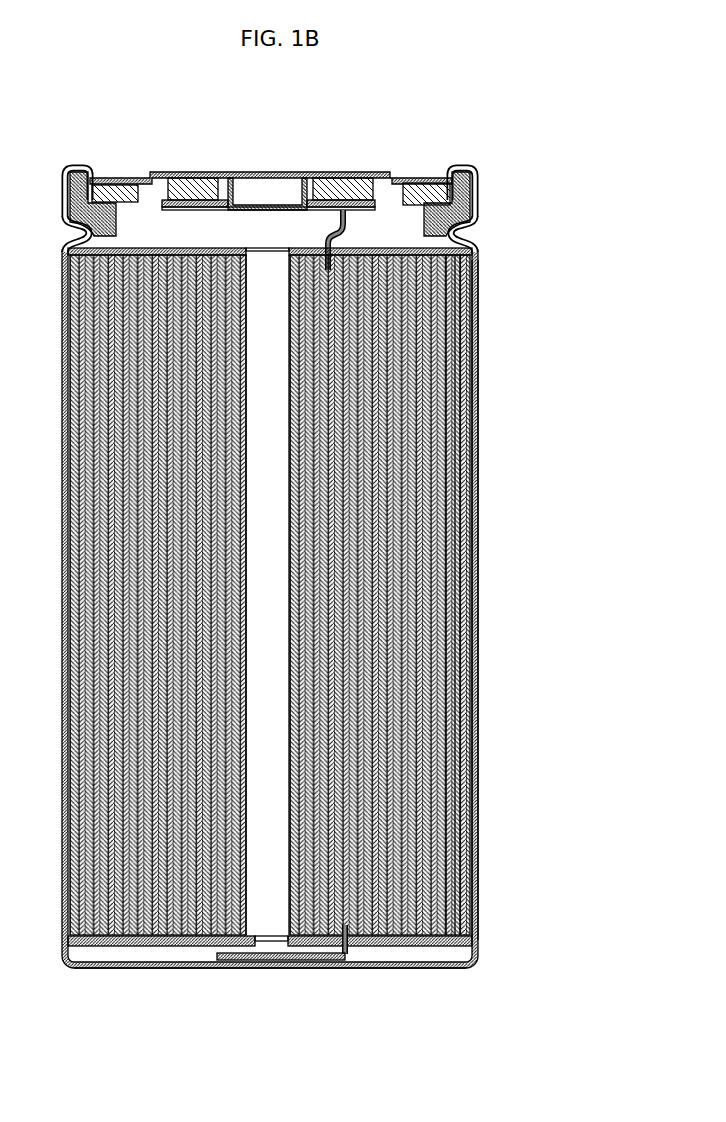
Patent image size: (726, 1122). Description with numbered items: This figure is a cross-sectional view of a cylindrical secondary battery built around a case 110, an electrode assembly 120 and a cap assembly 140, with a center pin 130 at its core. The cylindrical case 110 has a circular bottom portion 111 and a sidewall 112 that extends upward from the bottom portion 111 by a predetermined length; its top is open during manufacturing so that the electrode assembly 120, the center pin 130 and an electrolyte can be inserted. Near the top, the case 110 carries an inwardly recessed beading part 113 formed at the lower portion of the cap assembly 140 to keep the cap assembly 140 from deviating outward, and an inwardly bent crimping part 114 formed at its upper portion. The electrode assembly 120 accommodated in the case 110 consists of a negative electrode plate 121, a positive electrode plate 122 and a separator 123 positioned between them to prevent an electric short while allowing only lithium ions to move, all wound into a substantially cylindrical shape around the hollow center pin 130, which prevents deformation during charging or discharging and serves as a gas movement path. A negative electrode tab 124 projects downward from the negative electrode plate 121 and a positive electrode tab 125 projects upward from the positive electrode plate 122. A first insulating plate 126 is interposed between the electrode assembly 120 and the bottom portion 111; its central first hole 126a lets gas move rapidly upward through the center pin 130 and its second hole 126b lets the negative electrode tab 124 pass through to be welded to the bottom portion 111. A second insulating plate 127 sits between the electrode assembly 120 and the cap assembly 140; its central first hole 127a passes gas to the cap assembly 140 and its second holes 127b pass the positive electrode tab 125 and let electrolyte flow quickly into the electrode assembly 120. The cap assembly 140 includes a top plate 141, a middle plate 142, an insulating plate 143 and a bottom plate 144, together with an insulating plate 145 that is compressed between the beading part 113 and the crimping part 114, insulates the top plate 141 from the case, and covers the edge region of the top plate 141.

The case 110 is at (484, 522).
The bottom portion 111 is at (152, 972).
The sidewall 112 is at (480, 735).
The beading part 113 is at (473, 224).
The crimping part 114 is at (463, 167).
The electrode assembly 120 is at (315, 595).
The negative electrode plate 121 is at (470, 304).
The positive electrode plate 122 is at (450, 368).
The separator 123 is at (456, 330).
The negative electrode tab 124 is at (300, 961).
The positive electrode tab 125 is at (342, 218).
The first insulating plate 126 is at (287, 1004).
The first hole 126a is at (262, 946).
The second hole 126b is at (346, 956).
The second insulating plate 127 is at (314, 237).
The first hole 127a is at (262, 248).
The second holes 127b is at (192, 248).
The center pin 130 is at (298, 625).
The cap assembly 140 is at (315, 155).
The top plate 141 is at (212, 172).
The middle plate 142 is at (176, 178).
The insulating plate 143 is at (370, 178).
The bottom plate 144 is at (282, 176).
The insulating plate 145 is at (470, 186).